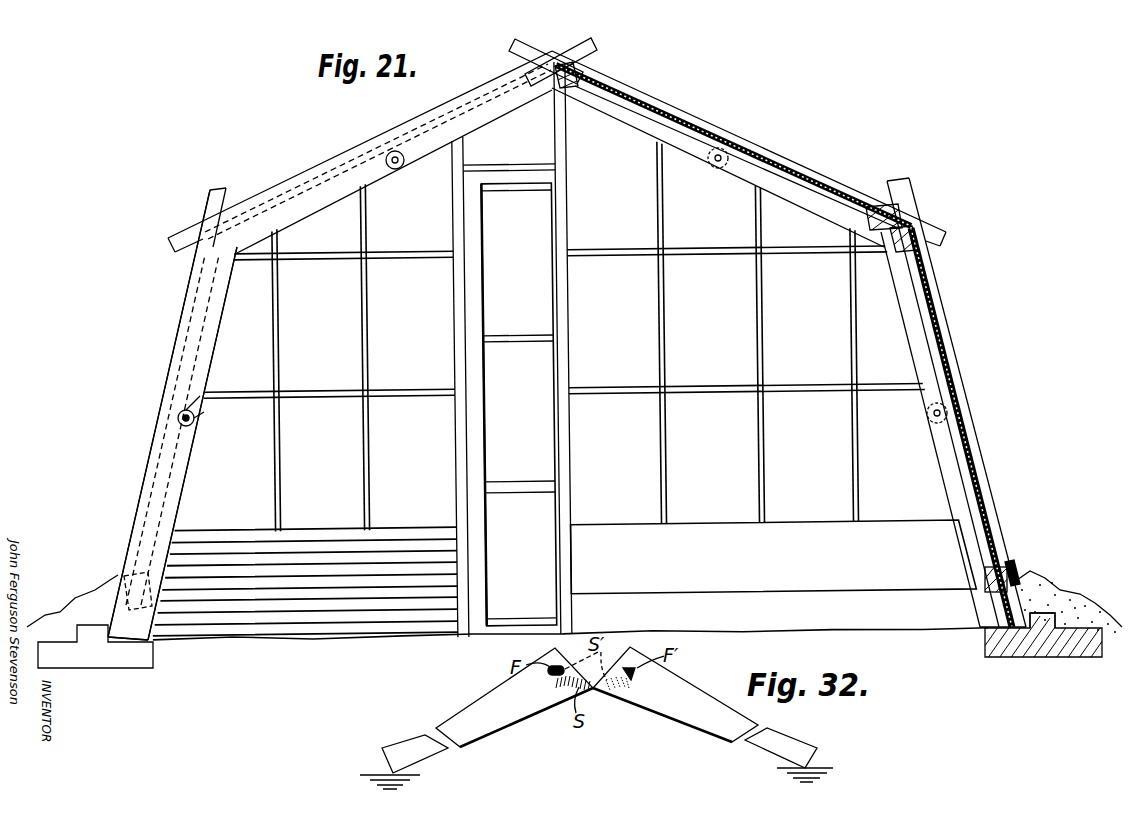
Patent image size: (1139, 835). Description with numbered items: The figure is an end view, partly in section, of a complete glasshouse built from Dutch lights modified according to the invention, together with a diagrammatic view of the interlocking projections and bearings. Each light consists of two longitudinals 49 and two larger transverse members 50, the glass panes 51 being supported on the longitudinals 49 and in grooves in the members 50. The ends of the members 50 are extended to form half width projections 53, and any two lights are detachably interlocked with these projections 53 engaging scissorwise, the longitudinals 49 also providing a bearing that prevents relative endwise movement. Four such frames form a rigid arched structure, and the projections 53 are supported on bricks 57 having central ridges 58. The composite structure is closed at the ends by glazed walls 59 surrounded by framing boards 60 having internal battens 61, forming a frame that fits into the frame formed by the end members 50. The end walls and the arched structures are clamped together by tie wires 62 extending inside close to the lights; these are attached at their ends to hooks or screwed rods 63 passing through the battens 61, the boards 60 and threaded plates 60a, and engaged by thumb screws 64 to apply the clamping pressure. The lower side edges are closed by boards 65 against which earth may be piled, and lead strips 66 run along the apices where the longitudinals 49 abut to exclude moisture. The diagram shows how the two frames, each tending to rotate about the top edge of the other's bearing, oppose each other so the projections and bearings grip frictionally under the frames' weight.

The longitudinal 49 is at (868, 233).
The transverse member 50 is at (815, 172).
The glass pane 51 is at (455, 104).
The half width projection 53 is at (183, 232).
The brick 57 is at (1083, 628).
The central ridge 58 is at (1053, 613).
The glazed wall 59 is at (564, 335).
The framing board 60 is at (180, 503).
The threaded plate 60a is at (196, 421).
The internal batten 61 is at (163, 450).
The tie wire 62 is at (736, 158).
The hook or screwed rod 63 is at (193, 412).
The thumb screw 64 is at (200, 426).
The board 65 is at (125, 588).
The lead strip 66 is at (575, 60).